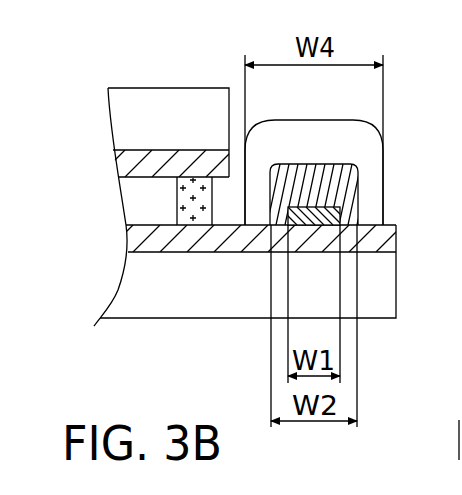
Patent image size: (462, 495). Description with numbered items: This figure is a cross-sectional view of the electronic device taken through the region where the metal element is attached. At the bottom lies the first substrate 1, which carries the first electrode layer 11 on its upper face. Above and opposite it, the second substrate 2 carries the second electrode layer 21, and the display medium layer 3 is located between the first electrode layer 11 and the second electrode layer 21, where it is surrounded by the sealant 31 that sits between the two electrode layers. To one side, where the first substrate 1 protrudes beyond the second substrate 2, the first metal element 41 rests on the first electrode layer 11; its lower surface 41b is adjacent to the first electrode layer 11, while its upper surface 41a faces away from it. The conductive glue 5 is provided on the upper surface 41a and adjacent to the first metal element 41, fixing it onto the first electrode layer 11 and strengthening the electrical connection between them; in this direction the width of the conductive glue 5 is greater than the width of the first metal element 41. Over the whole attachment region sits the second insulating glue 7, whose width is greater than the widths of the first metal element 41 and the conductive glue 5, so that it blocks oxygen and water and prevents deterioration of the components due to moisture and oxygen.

The first substrate 1 is at (133, 298).
The first electrode layer 11 is at (140, 238).
The second substrate 2 is at (120, 125).
The second electrode layer 21 is at (130, 163).
The display medium layer 3 is at (135, 191).
The sealant 31 is at (183, 210).
The conductive glue 5 is at (342, 190).
The second insulating glue 7 is at (370, 164).
The first metal element 41 is at (336, 215).
The upper surface 41a is at (312, 200).
The lower surface 41b is at (312, 228).